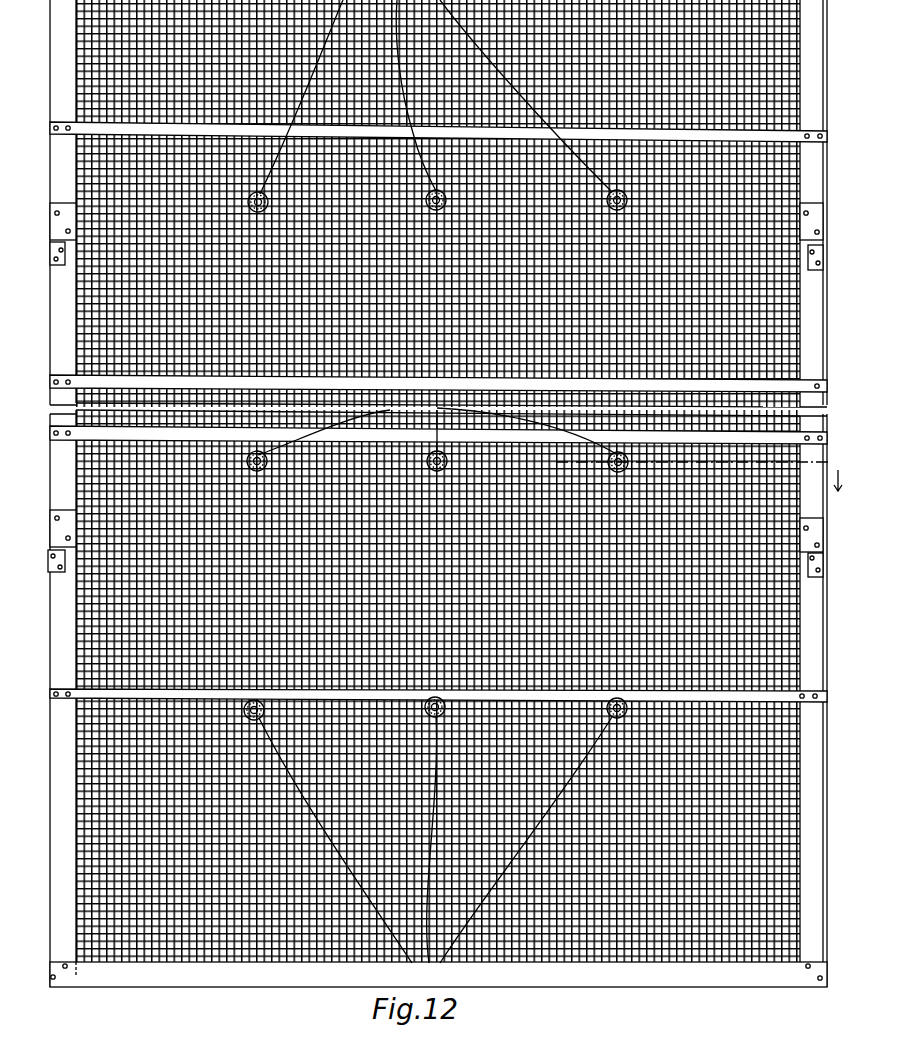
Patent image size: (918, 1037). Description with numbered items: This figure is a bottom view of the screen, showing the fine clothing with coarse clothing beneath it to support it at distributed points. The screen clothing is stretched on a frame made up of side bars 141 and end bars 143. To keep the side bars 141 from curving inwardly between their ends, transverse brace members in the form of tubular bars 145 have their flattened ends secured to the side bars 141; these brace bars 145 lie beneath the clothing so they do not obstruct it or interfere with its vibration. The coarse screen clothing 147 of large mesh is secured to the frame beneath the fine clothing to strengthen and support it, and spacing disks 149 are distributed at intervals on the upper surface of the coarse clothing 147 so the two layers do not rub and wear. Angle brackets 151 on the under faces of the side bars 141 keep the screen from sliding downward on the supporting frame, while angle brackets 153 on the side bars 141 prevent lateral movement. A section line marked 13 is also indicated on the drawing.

The section line 13- 13 is at (696, 472).
The side bars 141 is at (50, 479).
The end bars 143 is at (569, 975).
The tubular bars 145 is at (773, 133).
The screen clothing of large mesh 147 is at (767, 633).
The disks 149 is at (436, 493).
The angle brackets 151 is at (60, 236).
The angle brackets 153 is at (50, 247).